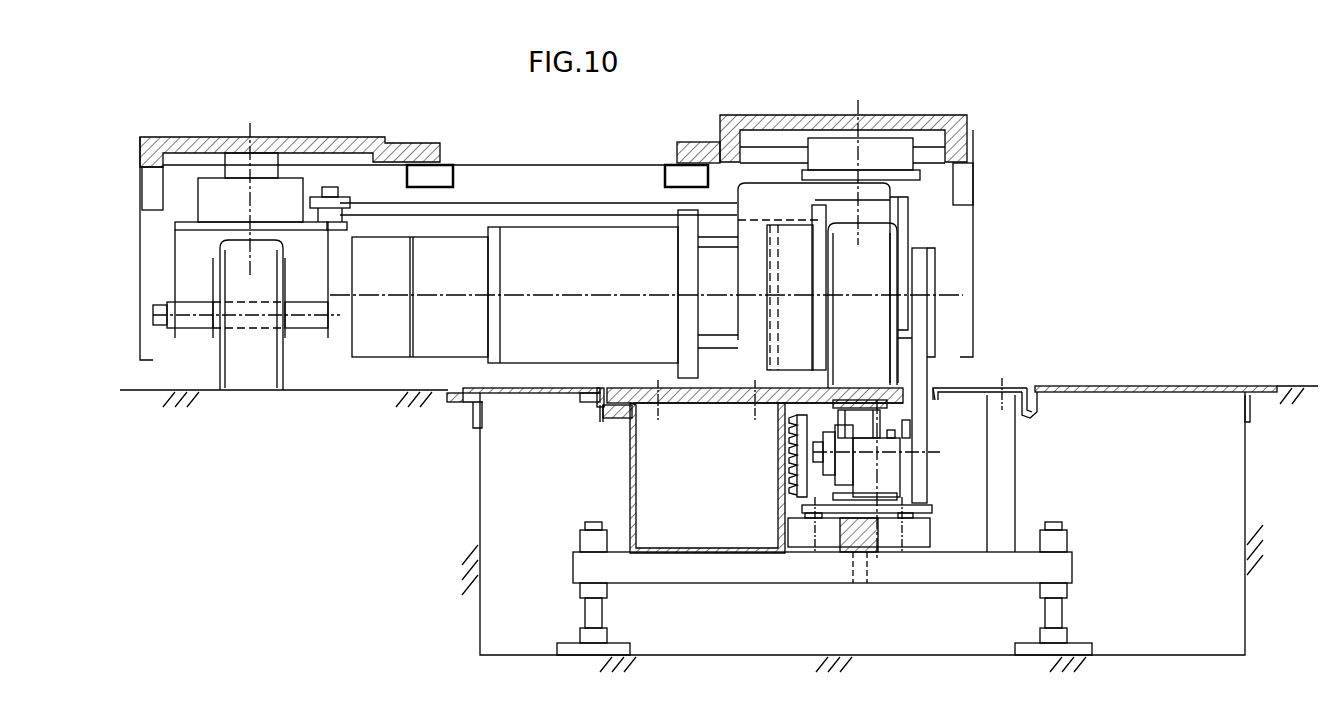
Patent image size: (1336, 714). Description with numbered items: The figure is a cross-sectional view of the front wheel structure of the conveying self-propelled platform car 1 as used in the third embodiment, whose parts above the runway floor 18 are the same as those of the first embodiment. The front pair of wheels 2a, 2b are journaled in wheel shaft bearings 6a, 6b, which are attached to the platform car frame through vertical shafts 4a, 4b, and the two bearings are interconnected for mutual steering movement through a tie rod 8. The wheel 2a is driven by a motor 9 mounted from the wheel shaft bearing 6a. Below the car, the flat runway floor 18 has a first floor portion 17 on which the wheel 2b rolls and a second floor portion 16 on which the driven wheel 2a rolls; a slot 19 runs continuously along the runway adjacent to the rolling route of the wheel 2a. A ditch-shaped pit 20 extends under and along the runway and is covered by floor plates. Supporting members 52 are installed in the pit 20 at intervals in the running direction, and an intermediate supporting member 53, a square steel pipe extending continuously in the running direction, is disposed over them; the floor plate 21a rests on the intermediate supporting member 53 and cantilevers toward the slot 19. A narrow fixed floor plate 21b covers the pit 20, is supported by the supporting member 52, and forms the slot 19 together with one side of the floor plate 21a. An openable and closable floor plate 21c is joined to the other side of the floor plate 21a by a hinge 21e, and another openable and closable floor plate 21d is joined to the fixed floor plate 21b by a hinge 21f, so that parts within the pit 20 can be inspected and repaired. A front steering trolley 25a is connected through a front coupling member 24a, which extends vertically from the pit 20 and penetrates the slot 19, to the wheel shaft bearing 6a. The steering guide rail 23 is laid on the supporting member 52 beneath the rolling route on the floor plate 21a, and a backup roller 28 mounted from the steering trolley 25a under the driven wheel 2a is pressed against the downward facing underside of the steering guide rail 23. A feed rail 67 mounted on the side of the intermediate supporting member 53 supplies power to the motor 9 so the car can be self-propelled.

The conveying self-propelled platform car 1 is at (992, 128).
The vertical shaft 4b is at (262, 162).
The vertical shaft 4a is at (880, 135).
The tie rod 8 is at (490, 207).
The motor 9 is at (550, 240).
The wheel shaft bearing 6b is at (188, 254).
The right front wheel 2b is at (262, 372).
The first floor portion 17 is at (313, 387).
The wheel shaft bearing 6a is at (905, 238).
The left front wheel 2a is at (855, 328).
The second floor portion 16 is at (900, 380).
The slot 19 is at (938, 390).
The openable and closable floor plate 21d is at (1118, 386).
The openable and closable floor plate 21c is at (535, 388).
The runway floor 18 is at (627, 386).
The hinge 21e is at (597, 404).
The floor plate 21a is at (760, 403).
The intermediate supporting member 53 is at (632, 470).
The feed rail 67 is at (792, 470).
The backup roller 28 is at (865, 423).
The front coupling member 24a is at (920, 462).
The fixed floor plate 21b is at (973, 395).
The hinge 21f is at (1040, 400).
The supporting member 52 is at (808, 560).
The steering guide rail 23 is at (868, 545).
The front steering trolley 25a is at (888, 520).
The pit 20 is at (1140, 595).